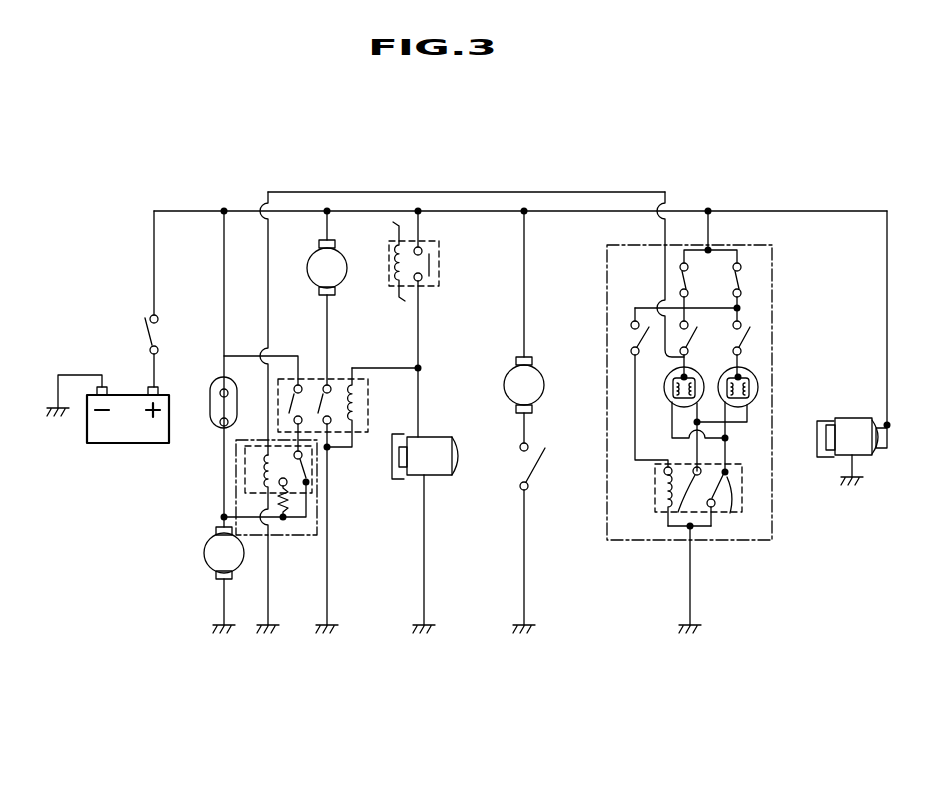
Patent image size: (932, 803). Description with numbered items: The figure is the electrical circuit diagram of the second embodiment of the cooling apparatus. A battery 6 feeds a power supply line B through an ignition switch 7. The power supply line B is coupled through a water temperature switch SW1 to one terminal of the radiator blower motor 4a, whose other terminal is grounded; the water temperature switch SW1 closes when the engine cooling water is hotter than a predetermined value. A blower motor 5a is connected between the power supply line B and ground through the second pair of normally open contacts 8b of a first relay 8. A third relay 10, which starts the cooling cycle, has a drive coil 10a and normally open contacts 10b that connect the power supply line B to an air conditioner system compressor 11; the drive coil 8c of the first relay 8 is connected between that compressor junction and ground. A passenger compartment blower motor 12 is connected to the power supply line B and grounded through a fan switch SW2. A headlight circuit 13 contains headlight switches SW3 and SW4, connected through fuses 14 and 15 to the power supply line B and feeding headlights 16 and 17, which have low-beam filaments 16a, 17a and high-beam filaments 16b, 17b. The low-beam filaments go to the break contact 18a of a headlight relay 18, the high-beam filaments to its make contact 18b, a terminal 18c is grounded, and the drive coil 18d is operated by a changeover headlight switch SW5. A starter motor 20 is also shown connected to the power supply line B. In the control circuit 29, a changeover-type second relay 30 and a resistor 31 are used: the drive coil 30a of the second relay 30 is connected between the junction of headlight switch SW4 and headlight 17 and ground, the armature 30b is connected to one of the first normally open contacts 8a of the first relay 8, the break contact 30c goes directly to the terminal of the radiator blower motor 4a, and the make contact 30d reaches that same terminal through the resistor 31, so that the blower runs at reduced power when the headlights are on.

The power supply line B is at (203, 207).
The battery 6 is at (138, 447).
The ignition switch 7 is at (157, 335).
The water temperature switch SW1 is at (209, 412).
The motor 4a is at (208, 557).
The motor 5a is at (347, 258).
The first relay 8 is at (314, 412).
The first pair of normally open contacts 8a is at (307, 378).
The second pair of normally open contacts 8b is at (337, 378).
The drive coil 8c is at (362, 406).
The third relay 10 is at (418, 324).
The drive coil 10a is at (394, 274).
The normally open contacts 10b is at (421, 248).
The air conditioner system compressor 11 is at (440, 476).
The blower motor 12 is at (544, 392).
The fan switch SW2 is at (522, 461).
The headlight circuit 13 is at (772, 528).
The fuse 14 is at (741, 287).
The fuse 15 is at (692, 278).
The headlight switch SW3 is at (746, 321).
The headlight switch SW4 is at (710, 285).
The headlight switch SW5 is at (627, 332).
The headlight 16 is at (758, 376).
The low-beam filament 16a is at (750, 390).
The high-beam filament 16b is at (750, 410).
The headlight 17 is at (665, 388).
The low-beam filament 17a is at (668, 404).
The high-beam filament 17b is at (702, 381).
The headlight relay 18 is at (717, 546).
The break contact 18a is at (729, 471).
The make contact 18b is at (668, 511).
The terminal 18c is at (780, 498).
The drive coil 18d is at (664, 476).
The starter motor 20 is at (870, 454).
The control circuit 29 is at (318, 540).
The second relay 30 is at (270, 528).
The drive coil 30a is at (262, 462).
The armature 30b is at (306, 470).
The break contact 30c is at (309, 484).
The make contact 30d is at (286, 486).
The resistor 31 is at (283, 520).